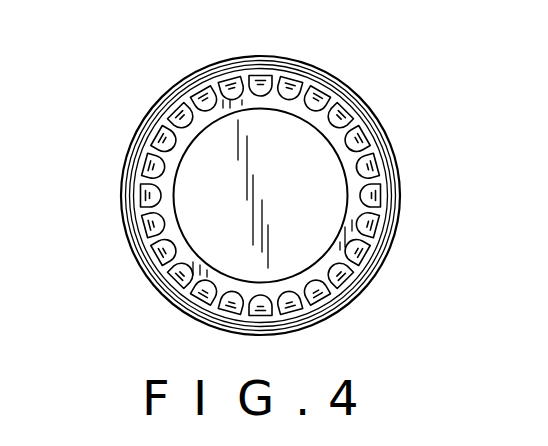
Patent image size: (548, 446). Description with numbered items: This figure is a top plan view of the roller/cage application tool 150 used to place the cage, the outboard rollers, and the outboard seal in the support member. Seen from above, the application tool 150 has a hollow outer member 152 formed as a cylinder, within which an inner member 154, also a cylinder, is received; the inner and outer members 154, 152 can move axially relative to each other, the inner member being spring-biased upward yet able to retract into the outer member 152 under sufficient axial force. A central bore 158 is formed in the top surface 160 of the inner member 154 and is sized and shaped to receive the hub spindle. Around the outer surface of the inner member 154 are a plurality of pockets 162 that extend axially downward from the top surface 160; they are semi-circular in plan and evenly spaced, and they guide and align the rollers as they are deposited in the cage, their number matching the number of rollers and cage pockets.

The application tool 150 is at (285, 177).
The outer member 152 is at (393, 155).
The inner member 154 is at (370, 236).
The central bore 158 is at (346, 185).
The top surface 160 is at (313, 122).
The pockets 162 is at (200, 103).